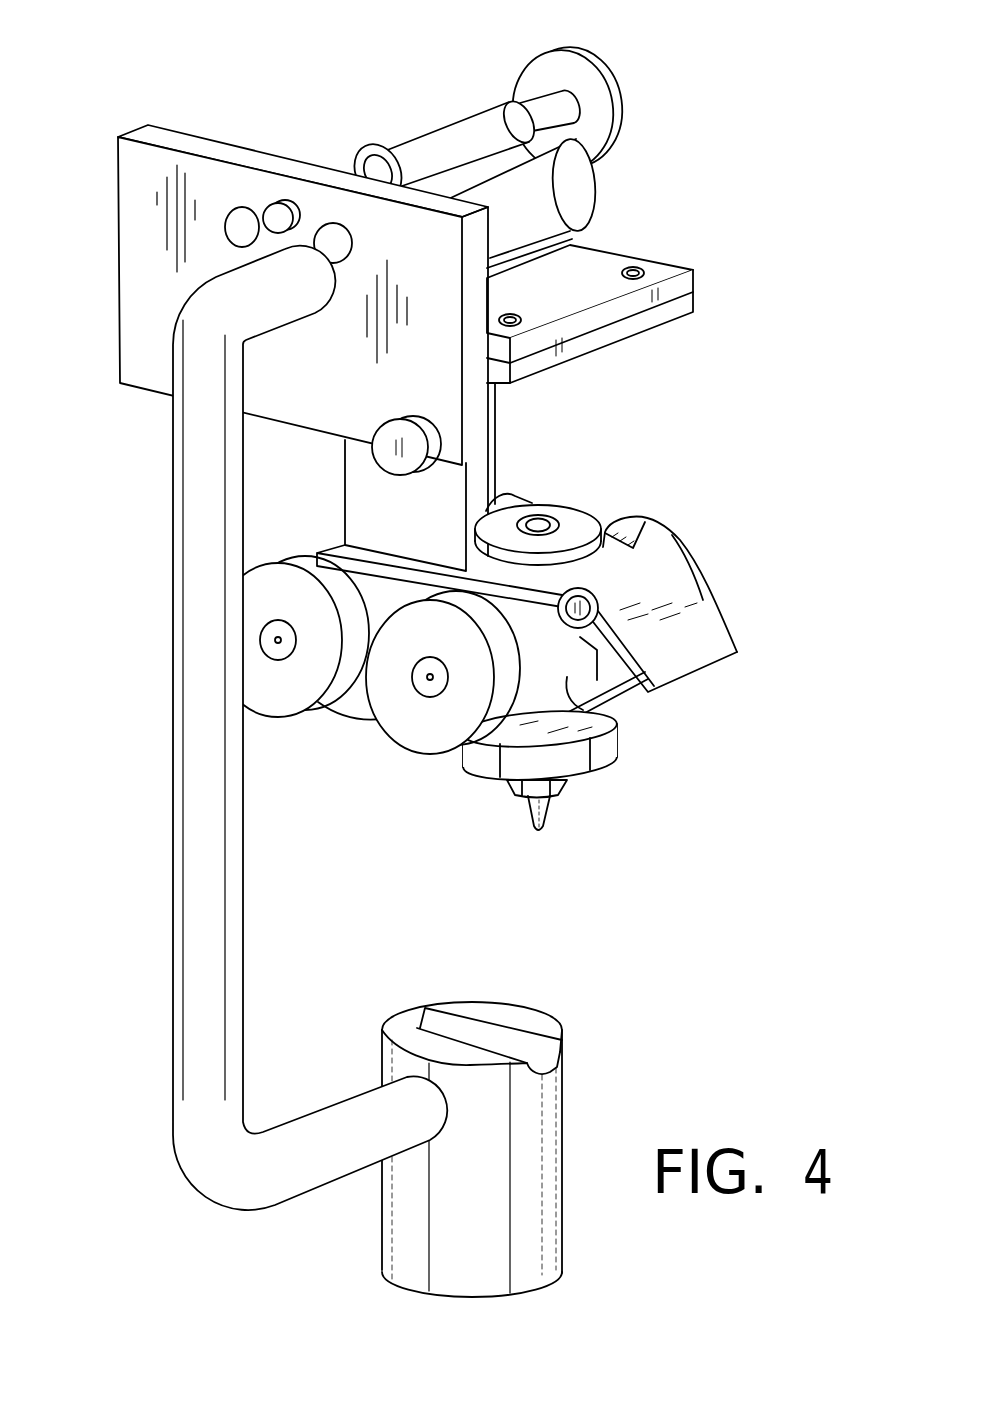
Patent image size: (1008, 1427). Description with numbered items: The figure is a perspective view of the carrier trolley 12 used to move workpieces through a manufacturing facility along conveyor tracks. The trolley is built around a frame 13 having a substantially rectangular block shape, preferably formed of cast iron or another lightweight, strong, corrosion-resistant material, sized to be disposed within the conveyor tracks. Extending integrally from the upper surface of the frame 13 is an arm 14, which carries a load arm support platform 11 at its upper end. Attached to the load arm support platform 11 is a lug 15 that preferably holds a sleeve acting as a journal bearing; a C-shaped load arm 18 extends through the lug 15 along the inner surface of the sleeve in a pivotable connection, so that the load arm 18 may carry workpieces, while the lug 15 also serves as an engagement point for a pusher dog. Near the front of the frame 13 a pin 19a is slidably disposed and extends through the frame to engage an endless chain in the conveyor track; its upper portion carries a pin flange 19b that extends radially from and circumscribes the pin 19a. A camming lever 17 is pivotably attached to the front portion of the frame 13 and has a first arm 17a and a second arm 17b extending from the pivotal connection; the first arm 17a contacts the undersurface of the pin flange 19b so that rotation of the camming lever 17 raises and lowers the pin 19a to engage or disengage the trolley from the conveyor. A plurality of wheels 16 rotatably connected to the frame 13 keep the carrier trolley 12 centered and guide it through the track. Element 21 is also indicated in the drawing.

The load arm support platform 11 is at (663, 269).
The carrier trolley 12 is at (738, 125).
The frame 13 is at (617, 733).
The arm 14 is at (375, 464).
The lug 15 is at (582, 207).
The wheels 16 is at (500, 487).
The camming lever 17 is at (719, 569).
The first arm 17a is at (670, 584).
The second arm 17b is at (737, 650).
The C-shaped load arm 18 is at (178, 613).
The pin 19a is at (548, 823).
The pin flange 19b is at (583, 520).
The carriage plate 21 is at (410, 560).